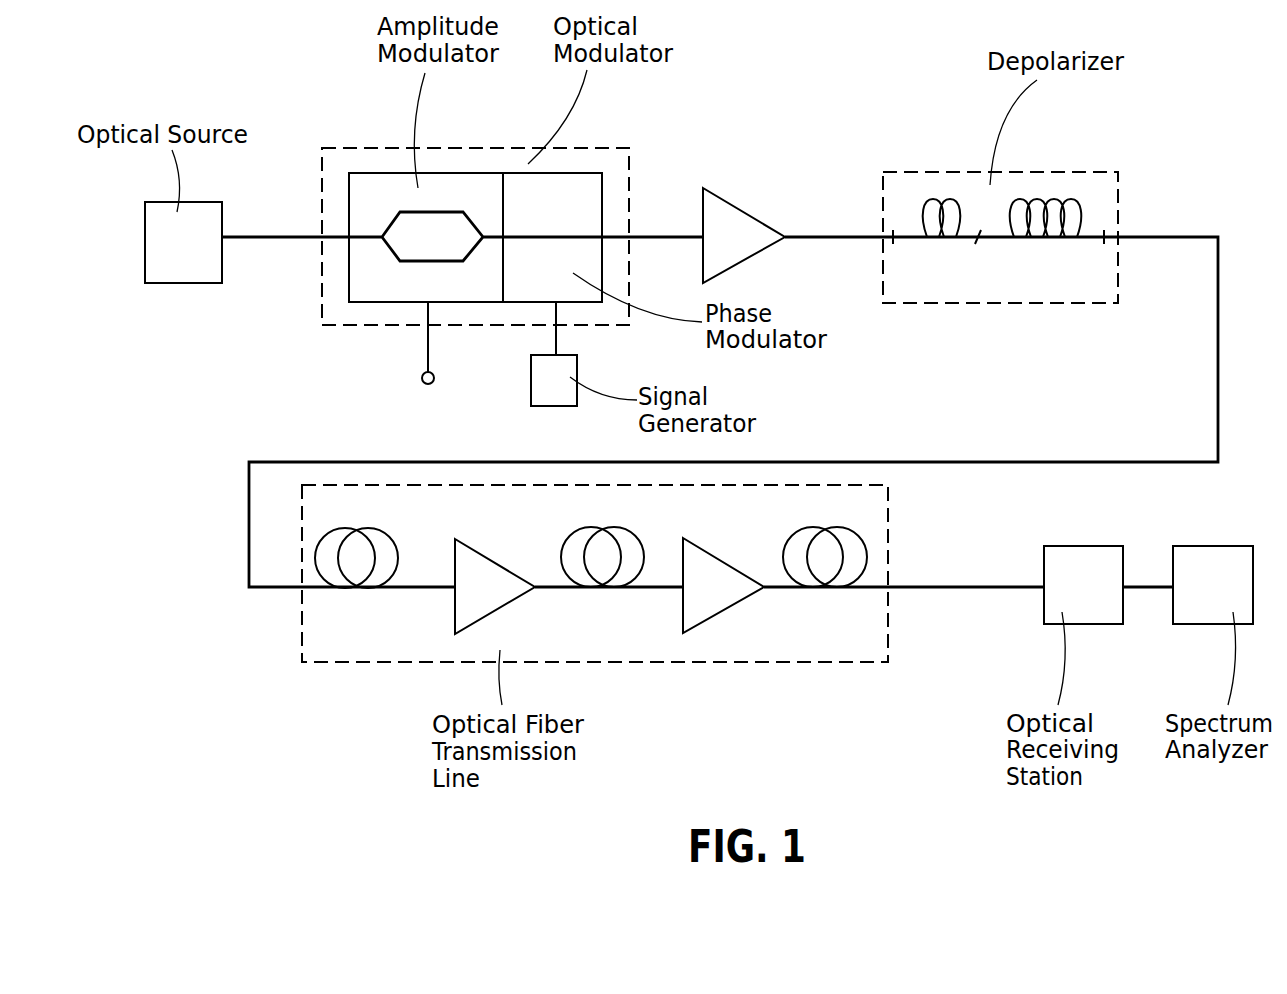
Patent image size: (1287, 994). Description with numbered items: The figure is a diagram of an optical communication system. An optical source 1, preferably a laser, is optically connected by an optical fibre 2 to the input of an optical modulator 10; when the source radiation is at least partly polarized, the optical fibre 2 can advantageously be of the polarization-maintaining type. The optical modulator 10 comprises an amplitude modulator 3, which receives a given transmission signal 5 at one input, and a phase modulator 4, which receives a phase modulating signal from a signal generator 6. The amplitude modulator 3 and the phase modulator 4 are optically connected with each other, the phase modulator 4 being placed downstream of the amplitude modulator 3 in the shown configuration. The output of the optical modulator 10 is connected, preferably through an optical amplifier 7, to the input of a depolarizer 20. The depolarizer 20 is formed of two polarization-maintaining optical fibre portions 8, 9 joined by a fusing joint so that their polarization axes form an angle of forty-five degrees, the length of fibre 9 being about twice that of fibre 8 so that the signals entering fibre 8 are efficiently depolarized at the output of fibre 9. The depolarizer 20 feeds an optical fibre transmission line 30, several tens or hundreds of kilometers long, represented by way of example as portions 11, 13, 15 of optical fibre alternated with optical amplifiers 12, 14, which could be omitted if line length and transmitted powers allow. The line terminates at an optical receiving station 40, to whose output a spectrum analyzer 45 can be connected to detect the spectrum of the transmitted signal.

The optical source 1 is at (175, 259).
The optical fibre 2 is at (287, 232).
The amplitude modulator 3 is at (450, 172).
The phase modulator 4 is at (565, 172).
The transmission signal 5 is at (424, 384).
The signal generator 6 is at (546, 394).
The optical amplifier 7 is at (742, 253).
The polarization-maintaining optical fibre portion 8 is at (930, 239).
The polarization-maintaining optical fibre portion 9 is at (1050, 239).
The optical modulator 10 is at (629, 177).
The optical fibre portion 11 is at (340, 590).
The optical amplifier 12 is at (498, 606).
The optical fibre portion 13 is at (587, 590).
The optical amplifier 14 is at (727, 600).
The optical fibre portion 15 is at (813, 590).
The depolarizer 20 is at (1118, 200).
The optical fibre transmission line 30 is at (888, 520).
The optical receiving station 40 is at (1068, 599).
The spectrum analyzer 45 is at (1198, 599).